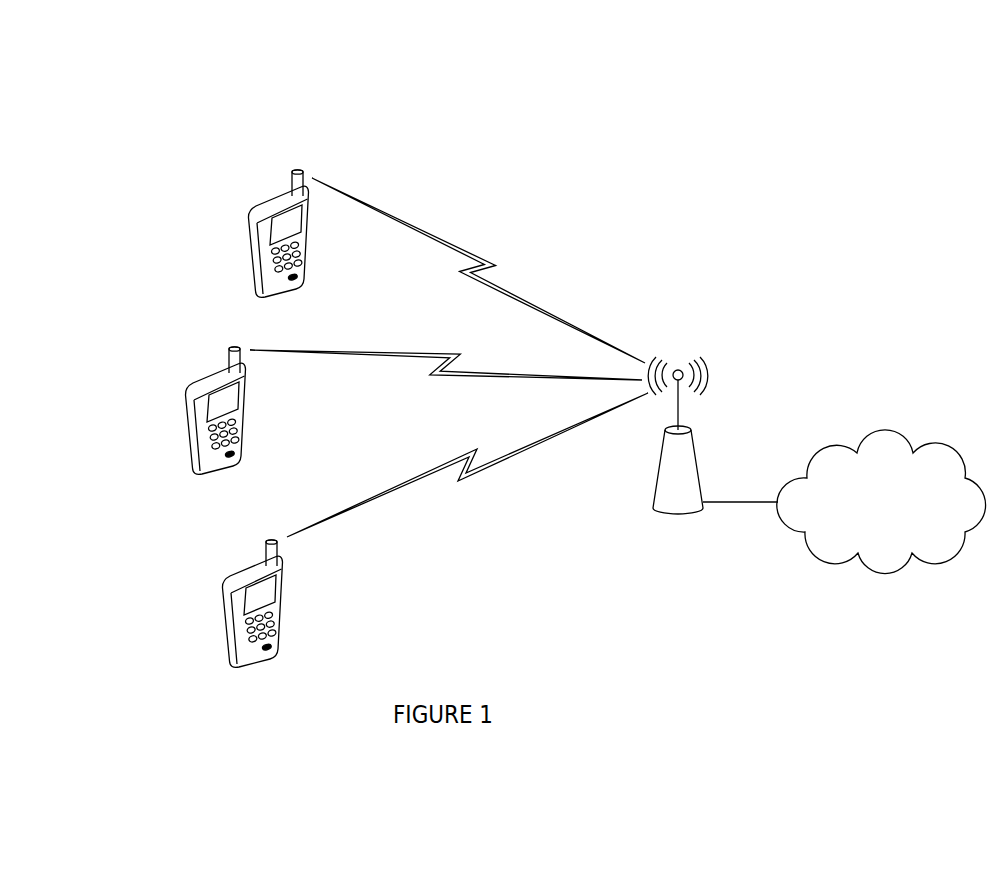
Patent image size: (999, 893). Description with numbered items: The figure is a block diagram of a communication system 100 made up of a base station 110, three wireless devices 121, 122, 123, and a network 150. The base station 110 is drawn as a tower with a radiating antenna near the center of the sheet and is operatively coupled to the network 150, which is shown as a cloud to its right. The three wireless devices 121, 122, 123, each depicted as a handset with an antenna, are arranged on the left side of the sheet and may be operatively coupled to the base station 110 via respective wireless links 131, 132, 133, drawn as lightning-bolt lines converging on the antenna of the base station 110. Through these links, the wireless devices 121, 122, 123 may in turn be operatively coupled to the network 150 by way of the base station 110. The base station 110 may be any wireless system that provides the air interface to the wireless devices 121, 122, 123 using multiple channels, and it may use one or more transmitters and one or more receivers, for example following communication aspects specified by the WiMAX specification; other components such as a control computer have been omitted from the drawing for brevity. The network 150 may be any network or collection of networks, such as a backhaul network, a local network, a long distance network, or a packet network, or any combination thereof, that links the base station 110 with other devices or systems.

The communication system 100 is at (588, 103).
The base station 110 is at (672, 514).
The wireless device 121 is at (272, 294).
The wireless device 122 is at (244, 664).
The wireless device 123 is at (201, 470).
The wireless link 131 is at (518, 293).
The wireless link 132 is at (523, 445).
The wireless link 133 is at (486, 367).
The network 150 is at (906, 527).